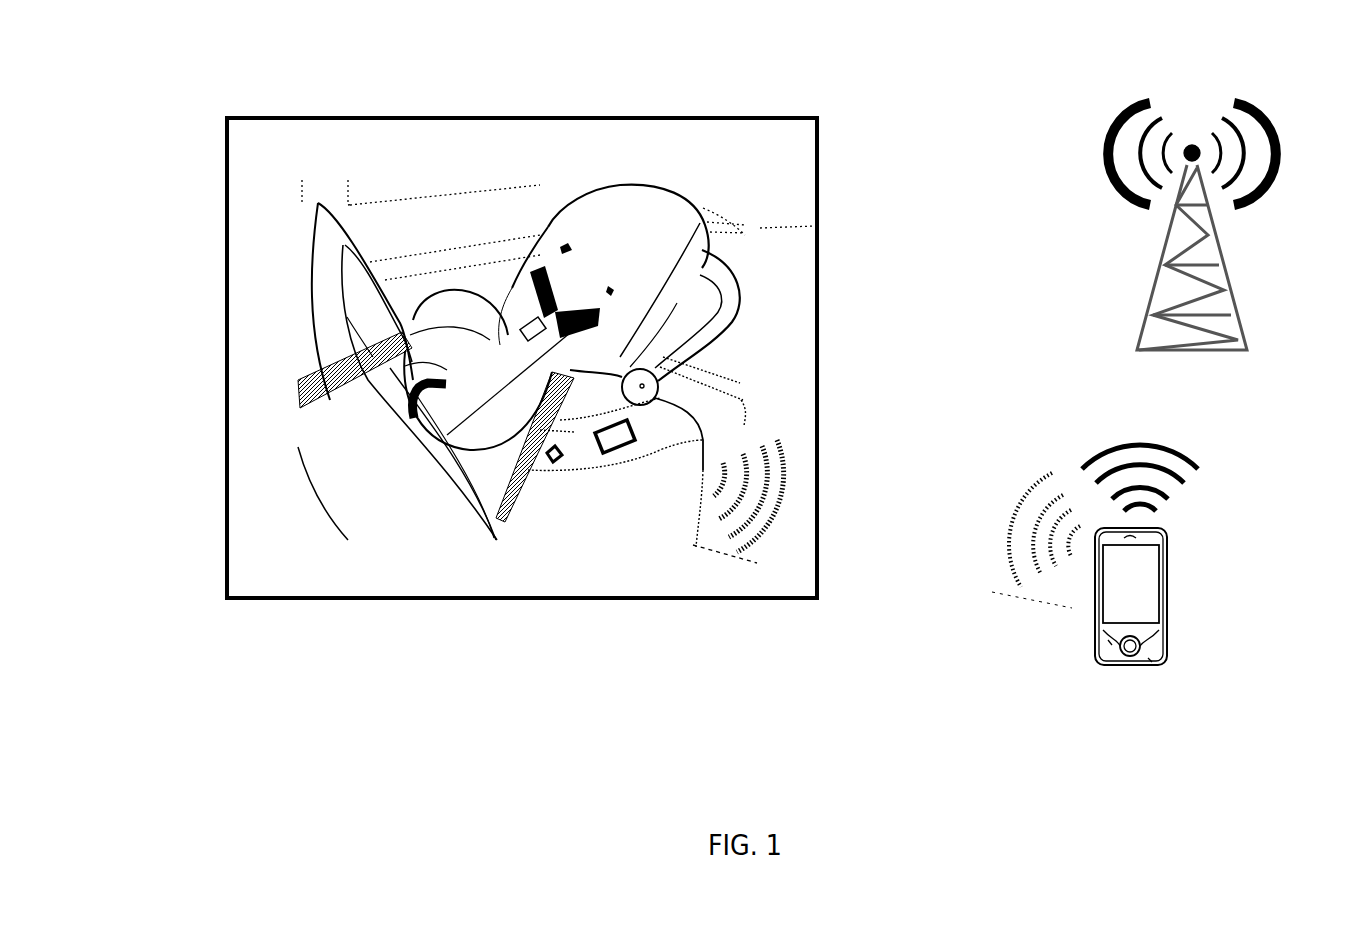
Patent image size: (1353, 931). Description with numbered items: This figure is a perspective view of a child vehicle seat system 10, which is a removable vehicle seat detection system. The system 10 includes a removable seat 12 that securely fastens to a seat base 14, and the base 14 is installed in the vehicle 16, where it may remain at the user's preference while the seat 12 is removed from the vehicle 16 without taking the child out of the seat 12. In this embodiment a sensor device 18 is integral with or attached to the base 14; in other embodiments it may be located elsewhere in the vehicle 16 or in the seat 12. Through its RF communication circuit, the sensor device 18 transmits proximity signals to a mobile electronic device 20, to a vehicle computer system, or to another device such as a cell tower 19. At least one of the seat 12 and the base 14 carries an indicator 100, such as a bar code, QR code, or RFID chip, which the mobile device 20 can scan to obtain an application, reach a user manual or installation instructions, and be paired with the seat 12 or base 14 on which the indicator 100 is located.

The child vehicle seat system 10 is at (443, 530).
The removable seat 12 is at (548, 225).
The seat base 14 is at (648, 442).
The vehicle 16 is at (250, 116).
The sensor device 18 is at (617, 440).
The cell tower 19 is at (1122, 116).
The mobile electronic device 20 is at (1177, 597).
The indicator 100 is at (553, 463).